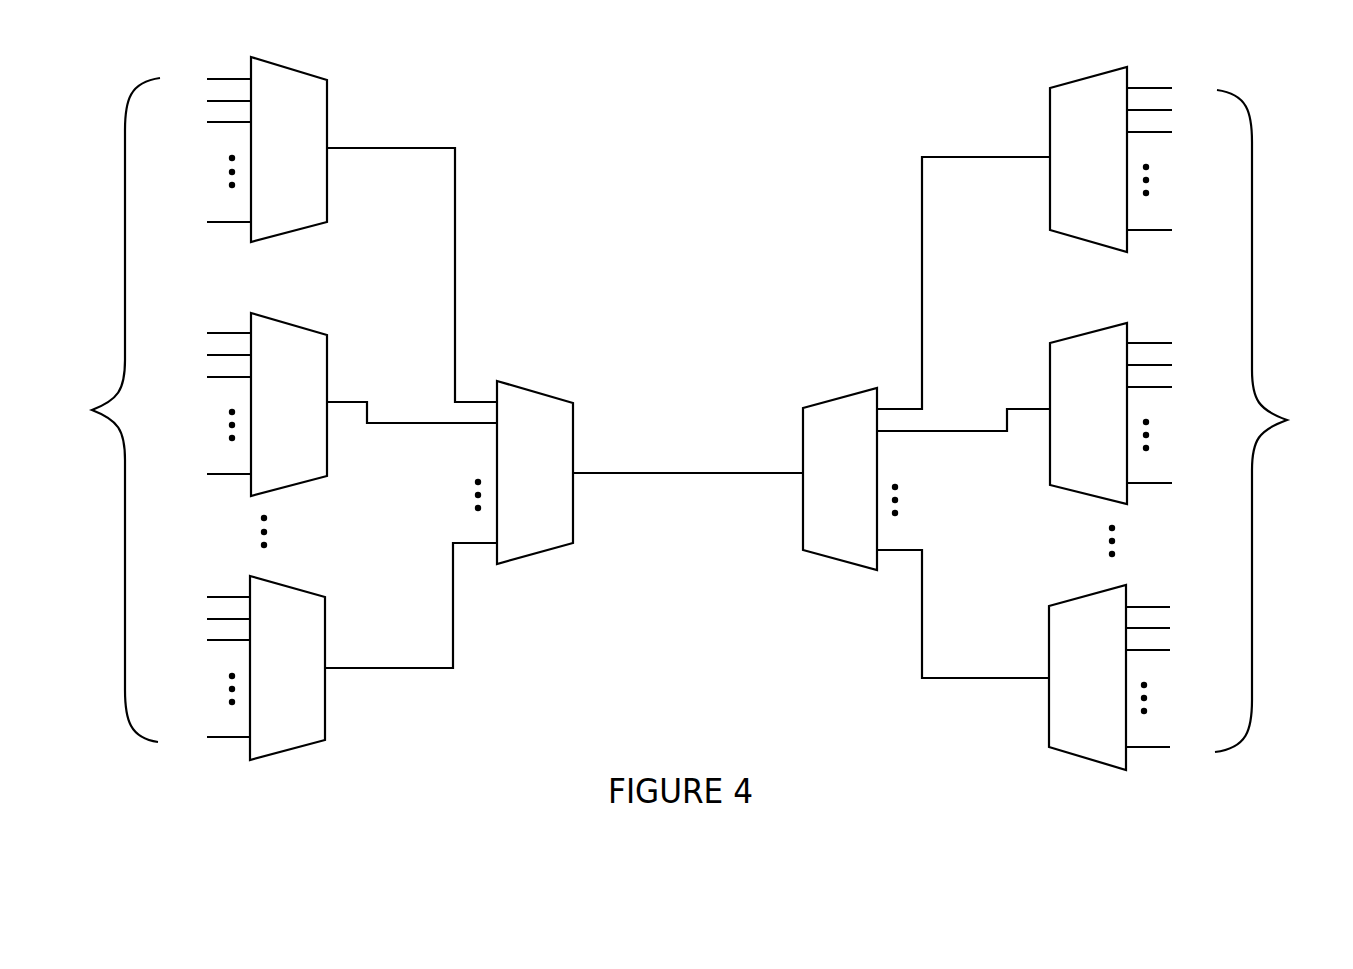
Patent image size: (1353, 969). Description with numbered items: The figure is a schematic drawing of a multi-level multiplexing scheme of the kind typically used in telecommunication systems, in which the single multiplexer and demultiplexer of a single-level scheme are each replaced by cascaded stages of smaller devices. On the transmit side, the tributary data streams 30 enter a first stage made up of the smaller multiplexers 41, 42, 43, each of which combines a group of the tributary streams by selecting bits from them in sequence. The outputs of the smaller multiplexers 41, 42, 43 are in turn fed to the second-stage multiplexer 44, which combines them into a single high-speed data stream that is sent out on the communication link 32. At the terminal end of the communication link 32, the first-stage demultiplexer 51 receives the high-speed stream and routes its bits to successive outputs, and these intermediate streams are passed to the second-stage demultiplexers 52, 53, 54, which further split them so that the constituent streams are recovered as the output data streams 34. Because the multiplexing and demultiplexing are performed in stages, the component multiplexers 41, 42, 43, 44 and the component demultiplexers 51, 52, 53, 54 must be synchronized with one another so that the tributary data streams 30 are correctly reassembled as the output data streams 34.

The tributary data streams 30 is at (100, 410).
The communication link 32 is at (690, 475).
The output data streams 34 is at (1281, 421).
The smaller multiplexer 41 is at (297, 747).
The smaller multiplexer 42 is at (297, 483).
The smaller multiplexer 43 is at (297, 229).
The smaller multiplexer 44 is at (545, 551).
The smaller demultiplexer 51 is at (833, 557).
The smaller demultiplexer 52 is at (1081, 757).
The smaller demultiplexer 53 is at (1083, 493).
The smaller demultiplexer 54 is at (1083, 240).